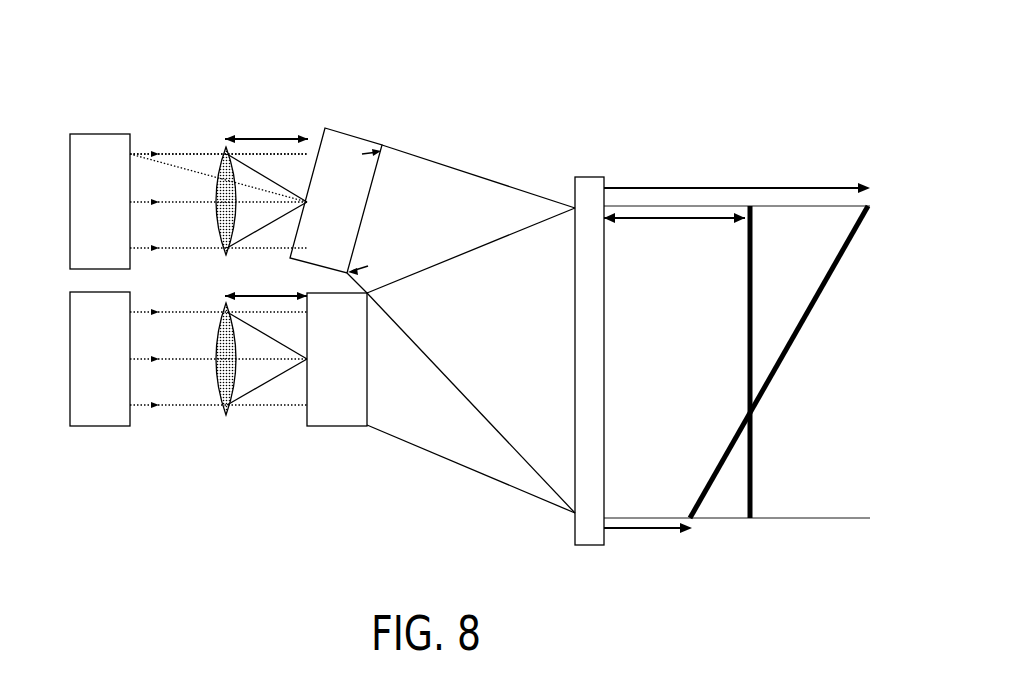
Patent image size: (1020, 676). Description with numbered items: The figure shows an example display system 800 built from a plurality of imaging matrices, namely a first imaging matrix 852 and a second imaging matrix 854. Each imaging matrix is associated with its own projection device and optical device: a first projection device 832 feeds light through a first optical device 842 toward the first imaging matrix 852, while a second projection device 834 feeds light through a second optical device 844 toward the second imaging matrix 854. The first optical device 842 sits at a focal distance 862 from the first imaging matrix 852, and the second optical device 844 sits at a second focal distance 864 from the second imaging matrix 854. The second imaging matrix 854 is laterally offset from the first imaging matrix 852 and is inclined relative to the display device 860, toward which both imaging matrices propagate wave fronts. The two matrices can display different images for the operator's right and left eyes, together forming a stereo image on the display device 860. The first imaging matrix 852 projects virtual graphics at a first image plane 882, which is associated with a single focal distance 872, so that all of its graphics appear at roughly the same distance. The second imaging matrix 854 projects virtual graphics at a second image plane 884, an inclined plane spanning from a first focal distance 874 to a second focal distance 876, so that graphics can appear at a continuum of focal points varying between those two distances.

The display system 800 is at (566, 94).
The first projection device 832 is at (102, 427).
The second projection device 834 is at (100, 135).
The first optical device 842 is at (218, 377).
The second optical device 844 is at (218, 177).
The first imaging matrix 852 is at (336, 427).
The second imaging matrix 854 is at (355, 132).
The display device 860 is at (605, 370).
The focal distance 862 is at (225, 296).
The second focal distance 864 is at (267, 138).
The focal distance 872 is at (680, 220).
The first focal distance 874 is at (732, 187).
The second focal distance 876 is at (640, 530).
The first image plane 882 is at (747, 303).
The second image plane 884 is at (803, 325).